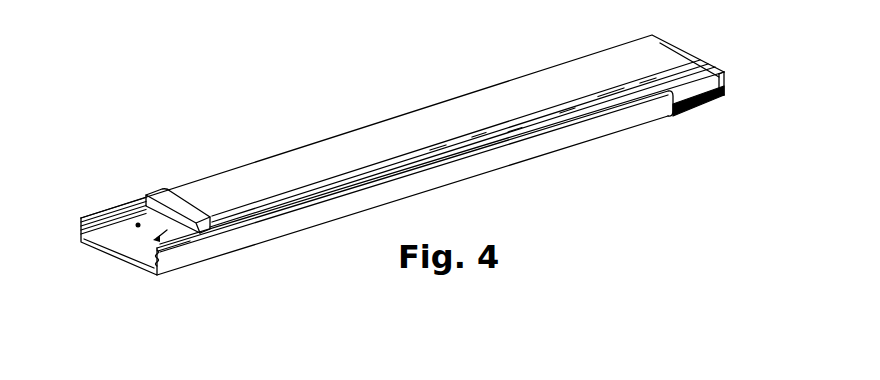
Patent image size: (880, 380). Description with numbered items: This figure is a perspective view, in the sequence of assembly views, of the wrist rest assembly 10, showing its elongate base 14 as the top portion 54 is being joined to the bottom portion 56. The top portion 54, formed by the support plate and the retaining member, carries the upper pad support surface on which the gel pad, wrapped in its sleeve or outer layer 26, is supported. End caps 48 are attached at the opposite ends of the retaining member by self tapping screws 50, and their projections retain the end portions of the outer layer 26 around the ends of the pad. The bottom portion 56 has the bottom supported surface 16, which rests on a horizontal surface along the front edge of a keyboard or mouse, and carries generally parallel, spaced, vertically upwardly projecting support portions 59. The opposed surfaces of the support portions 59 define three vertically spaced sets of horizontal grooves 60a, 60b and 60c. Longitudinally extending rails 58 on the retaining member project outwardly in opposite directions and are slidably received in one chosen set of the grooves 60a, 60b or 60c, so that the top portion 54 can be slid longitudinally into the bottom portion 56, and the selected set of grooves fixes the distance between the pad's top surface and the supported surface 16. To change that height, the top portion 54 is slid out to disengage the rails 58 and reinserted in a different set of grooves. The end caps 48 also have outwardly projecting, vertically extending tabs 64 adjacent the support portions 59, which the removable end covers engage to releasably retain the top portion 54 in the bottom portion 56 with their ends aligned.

The wrist rest assembly 10 is at (458, 73).
The elongate base 14 is at (547, 161).
The bottom supported surface 16 is at (236, 252).
The outer layer 26 is at (397, 149).
The end cap 48 is at (158, 226).
The self tapping screw 50 is at (113, 222).
The top portion 54 is at (157, 240).
The bottom portion 56 is at (463, 184).
The rail 58 is at (705, 103).
The support portion 59 is at (166, 262).
The set of horizontal grooves 60a is at (123, 224).
The set of horizontal grooves 60b is at (128, 229).
The set of horizontal grooves 60c is at (139, 237).
The tab 64 is at (725, 84).